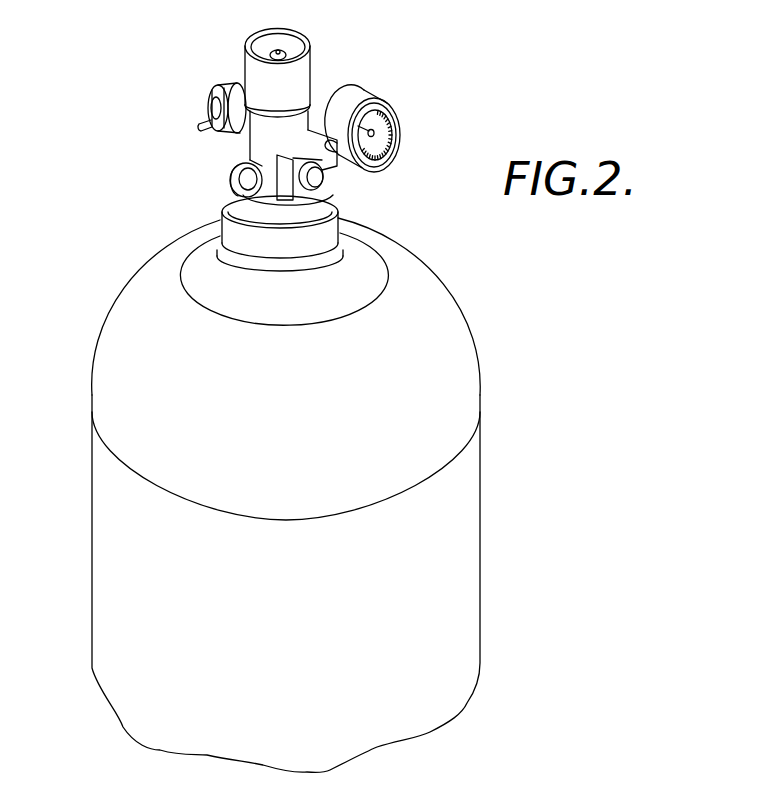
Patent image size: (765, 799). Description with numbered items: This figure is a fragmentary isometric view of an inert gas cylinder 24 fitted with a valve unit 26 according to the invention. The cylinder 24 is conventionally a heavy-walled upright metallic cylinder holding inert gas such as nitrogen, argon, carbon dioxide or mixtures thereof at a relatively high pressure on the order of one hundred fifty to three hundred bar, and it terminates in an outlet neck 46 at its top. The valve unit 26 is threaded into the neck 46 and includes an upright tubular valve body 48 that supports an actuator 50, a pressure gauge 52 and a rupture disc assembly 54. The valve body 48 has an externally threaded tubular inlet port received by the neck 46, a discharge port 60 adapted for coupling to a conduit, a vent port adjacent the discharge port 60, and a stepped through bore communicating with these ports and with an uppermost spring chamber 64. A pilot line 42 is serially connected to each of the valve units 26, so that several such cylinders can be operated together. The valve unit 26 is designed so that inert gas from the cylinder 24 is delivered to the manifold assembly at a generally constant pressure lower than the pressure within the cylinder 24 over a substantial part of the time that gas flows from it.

The cylinder 24 is at (460, 535).
The valve unit 26 is at (202, 144).
The pilot line 42 is at (204, 118).
The outlet neck 46 is at (230, 223).
The valve body 48 is at (304, 77).
The actuator 50 is at (211, 77).
The pressure gauge 52 is at (365, 90).
The rupture disc assembly 54 is at (337, 188).
The discharge port 60 is at (240, 160).
The spring chamber 64 is at (305, 53).